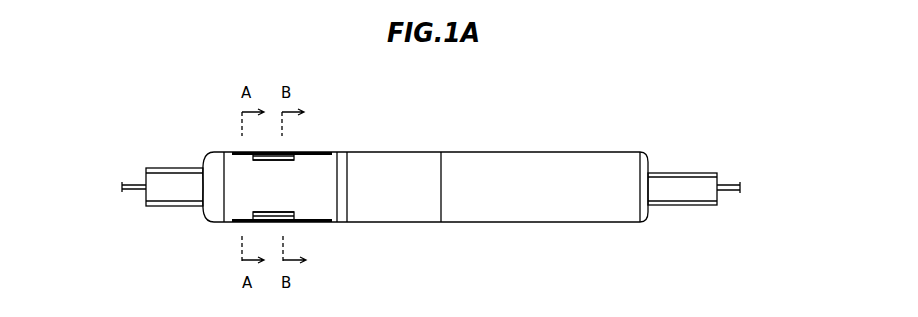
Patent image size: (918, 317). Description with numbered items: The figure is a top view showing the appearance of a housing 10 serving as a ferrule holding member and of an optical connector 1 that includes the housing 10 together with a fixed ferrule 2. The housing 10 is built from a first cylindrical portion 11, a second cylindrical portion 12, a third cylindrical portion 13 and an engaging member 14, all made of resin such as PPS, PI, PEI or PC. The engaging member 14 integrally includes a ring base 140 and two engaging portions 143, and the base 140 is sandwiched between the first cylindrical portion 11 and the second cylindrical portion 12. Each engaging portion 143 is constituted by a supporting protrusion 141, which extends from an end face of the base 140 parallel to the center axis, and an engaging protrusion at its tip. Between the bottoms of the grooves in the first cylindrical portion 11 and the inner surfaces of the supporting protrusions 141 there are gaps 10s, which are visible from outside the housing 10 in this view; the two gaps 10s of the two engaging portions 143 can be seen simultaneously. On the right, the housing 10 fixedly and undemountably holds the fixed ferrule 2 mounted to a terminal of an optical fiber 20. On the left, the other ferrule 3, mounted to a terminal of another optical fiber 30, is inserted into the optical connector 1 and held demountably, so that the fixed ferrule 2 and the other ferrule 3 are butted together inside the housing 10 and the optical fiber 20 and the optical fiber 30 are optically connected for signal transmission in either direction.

The optical connector 1 is at (712, 70).
The fixed ferrule 2 is at (710, 172).
The other ferrule 3 is at (197, 154).
The housing 10 is at (564, 112).
The gaps 10s is at (272, 160).
The first cylindrical portion 11 is at (331, 174).
The second cylindrical portion 12 is at (377, 176).
The third cylindrical portion 13 is at (453, 176).
The engaging member 14 is at (487, 245).
The ring base 140 is at (342, 212).
The supporting protrusions 141 is at (289, 152).
The engaging portions 143 is at (293, 223).
The optical fiber 20 is at (727, 193).
The optical fiber 30 is at (133, 192).